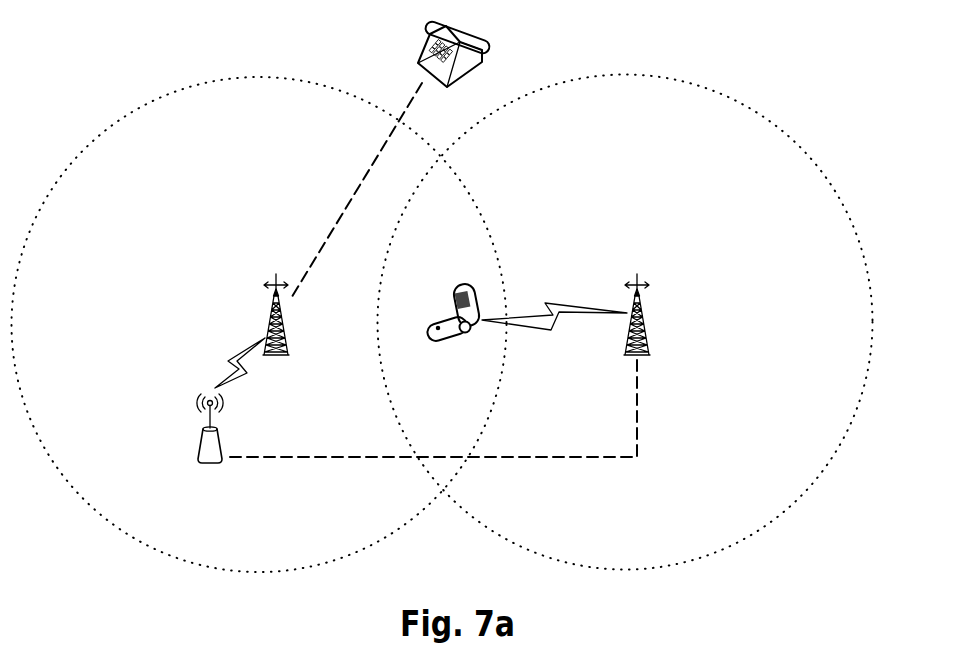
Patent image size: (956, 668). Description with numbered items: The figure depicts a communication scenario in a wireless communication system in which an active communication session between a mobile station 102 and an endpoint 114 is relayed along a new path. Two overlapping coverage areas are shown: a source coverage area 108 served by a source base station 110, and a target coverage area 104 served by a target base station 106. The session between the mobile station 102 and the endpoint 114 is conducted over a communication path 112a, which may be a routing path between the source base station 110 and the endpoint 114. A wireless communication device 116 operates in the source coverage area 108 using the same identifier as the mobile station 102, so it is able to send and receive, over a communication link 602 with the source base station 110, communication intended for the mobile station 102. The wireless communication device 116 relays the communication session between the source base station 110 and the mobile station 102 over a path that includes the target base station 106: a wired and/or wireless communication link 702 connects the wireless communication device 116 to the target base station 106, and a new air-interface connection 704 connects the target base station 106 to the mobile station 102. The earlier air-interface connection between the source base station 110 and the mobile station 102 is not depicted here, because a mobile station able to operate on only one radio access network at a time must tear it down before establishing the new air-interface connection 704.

The mobile station 102 is at (485, 286).
The target coverage area 104 is at (815, 228).
The target base station 106 is at (644, 318).
The source coverage area 108 is at (103, 228).
The source base station 110 is at (265, 333).
The communication path 112a is at (362, 183).
The endpoint 114 is at (418, 62).
The wireless communication device 116 is at (197, 449).
The communication link 602 is at (258, 366).
The communication link 702 is at (638, 432).
The new air-interface connection 704 is at (563, 330).